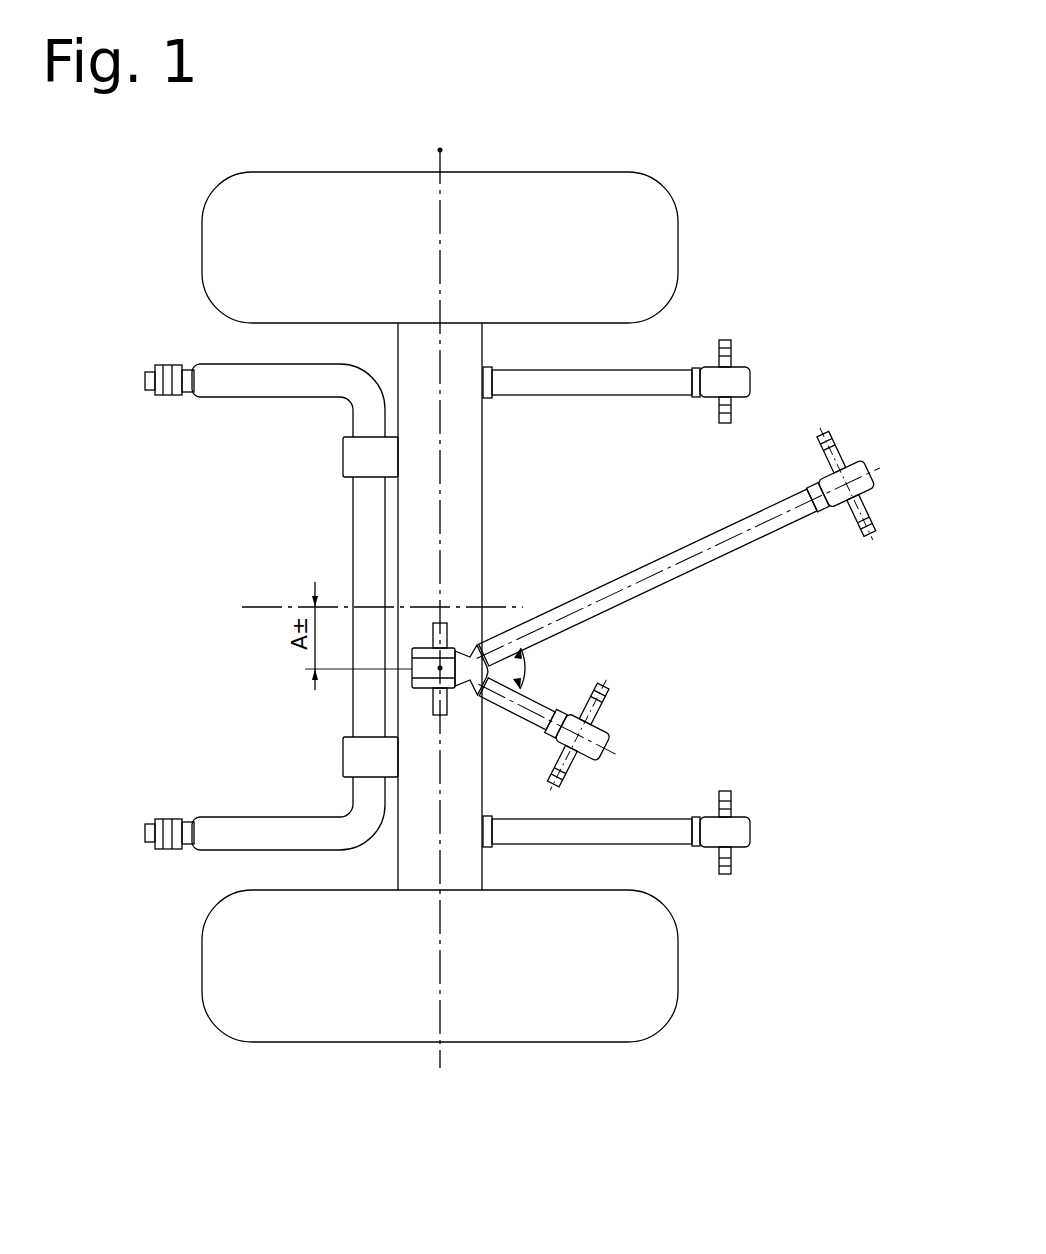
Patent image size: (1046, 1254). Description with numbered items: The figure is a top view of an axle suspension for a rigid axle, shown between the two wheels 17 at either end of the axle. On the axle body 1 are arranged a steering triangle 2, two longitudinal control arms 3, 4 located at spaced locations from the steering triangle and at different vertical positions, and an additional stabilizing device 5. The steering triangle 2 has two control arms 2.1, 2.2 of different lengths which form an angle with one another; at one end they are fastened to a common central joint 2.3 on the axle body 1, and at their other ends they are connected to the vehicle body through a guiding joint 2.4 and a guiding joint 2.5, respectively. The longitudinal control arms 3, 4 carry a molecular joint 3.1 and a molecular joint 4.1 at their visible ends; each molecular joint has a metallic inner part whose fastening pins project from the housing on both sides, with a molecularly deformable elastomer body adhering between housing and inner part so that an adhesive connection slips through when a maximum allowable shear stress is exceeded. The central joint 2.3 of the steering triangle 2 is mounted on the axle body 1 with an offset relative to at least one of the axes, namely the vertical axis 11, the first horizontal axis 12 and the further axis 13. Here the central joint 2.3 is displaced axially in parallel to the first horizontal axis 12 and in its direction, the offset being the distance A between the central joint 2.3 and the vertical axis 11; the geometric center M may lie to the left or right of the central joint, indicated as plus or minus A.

The axle body 1 is at (428, 843).
The steering triangle 2 is at (600, 641).
The control arm 2.1 is at (737, 537).
The control arm 2.2 is at (528, 705).
The central joint 2.3 is at (440, 668).
The guiding joint 2.4 is at (845, 473).
The guiding joint 2.5 is at (588, 728).
The longitudinal control arm 3 is at (588, 380).
The molecular joint 3.1 is at (725, 381).
The longitudinal control arm 4 is at (637, 832).
The molecular joint 4.1 is at (740, 833).
The stabilizing device 5 is at (340, 378).
The vertical axis 11 is at (440, 607).
The first horizontal axis 12 is at (443, 150).
The axis 13 is at (356, 604).
The wheel 17 is at (288, 255).